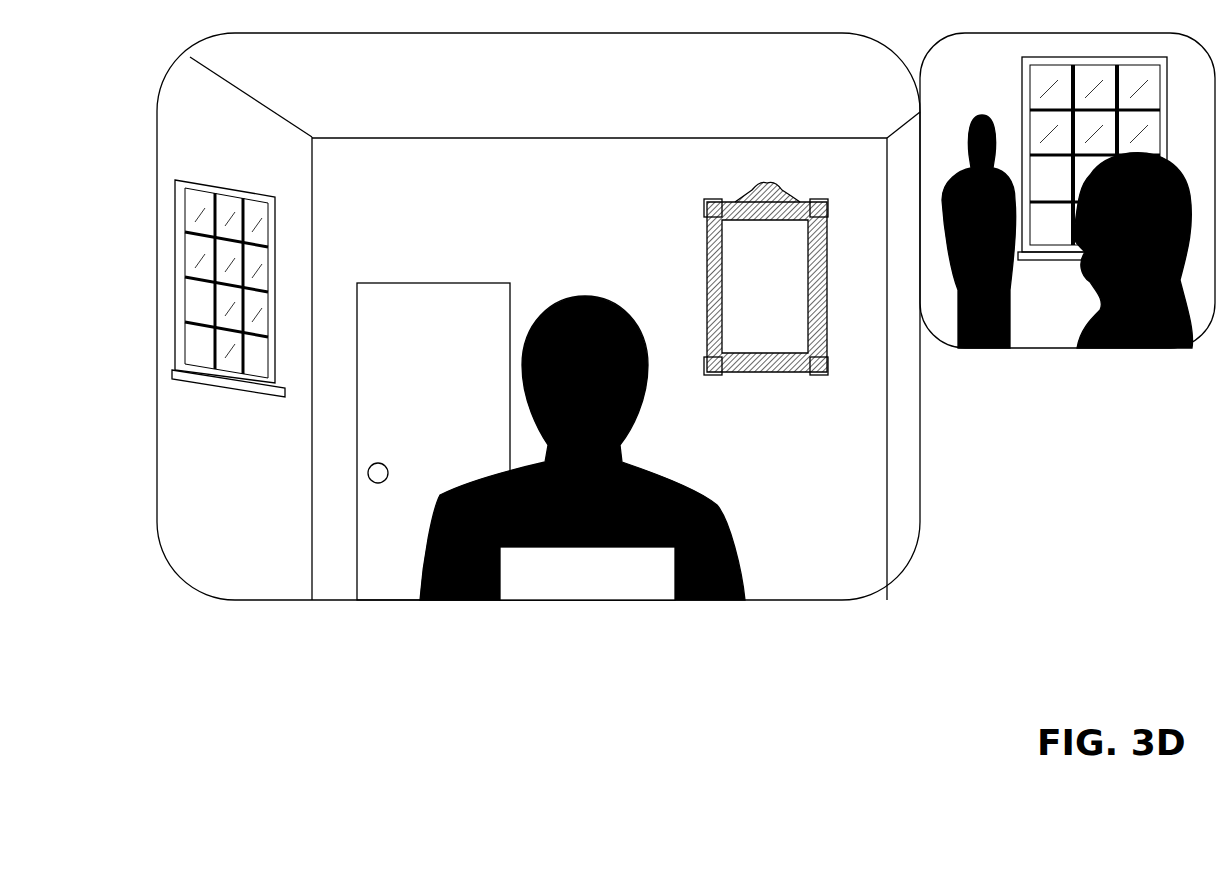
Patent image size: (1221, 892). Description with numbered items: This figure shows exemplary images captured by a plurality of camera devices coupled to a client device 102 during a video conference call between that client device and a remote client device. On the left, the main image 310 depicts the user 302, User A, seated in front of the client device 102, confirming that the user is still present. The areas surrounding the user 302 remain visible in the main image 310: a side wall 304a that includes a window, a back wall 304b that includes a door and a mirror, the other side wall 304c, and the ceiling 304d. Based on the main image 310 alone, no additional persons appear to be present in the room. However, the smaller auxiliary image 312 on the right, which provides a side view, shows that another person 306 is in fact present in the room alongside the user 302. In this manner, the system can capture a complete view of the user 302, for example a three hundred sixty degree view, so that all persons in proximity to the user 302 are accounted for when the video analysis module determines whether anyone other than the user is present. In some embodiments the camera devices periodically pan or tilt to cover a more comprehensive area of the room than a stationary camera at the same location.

The client device 102 is at (587, 573).
The user 302 is at (806, 376).
The side wall 304a is at (242, 328).
The back wall 304b is at (599, 369).
The other side wall 304c is at (903, 356).
The ceiling 304d is at (412, 97).
The person 306 is at (979, 231).
The main image 310 is at (930, 627).
The auxiliary image 312 is at (933, 368).